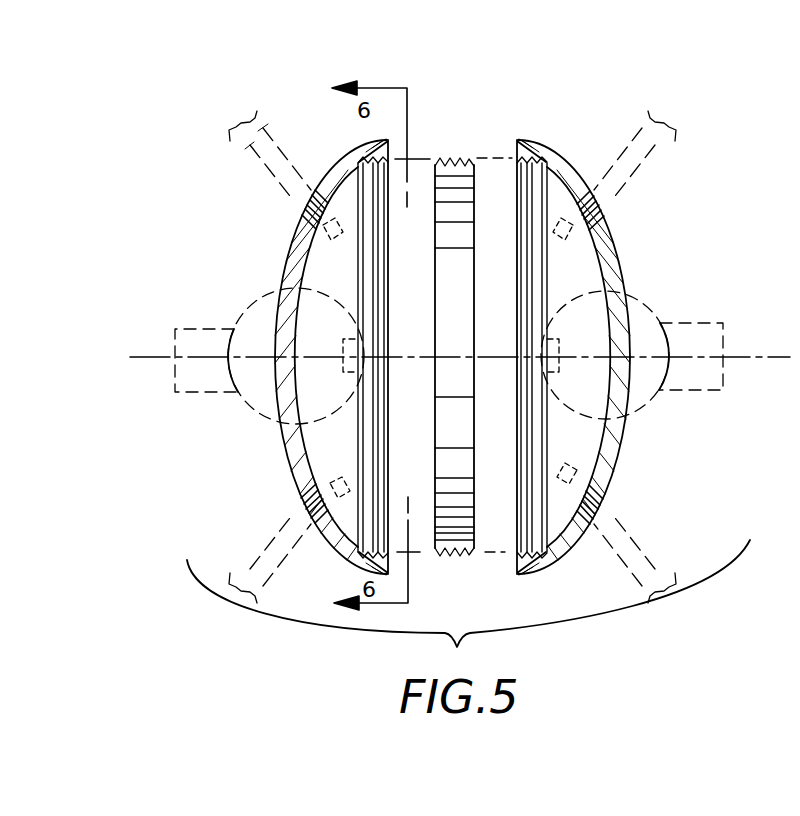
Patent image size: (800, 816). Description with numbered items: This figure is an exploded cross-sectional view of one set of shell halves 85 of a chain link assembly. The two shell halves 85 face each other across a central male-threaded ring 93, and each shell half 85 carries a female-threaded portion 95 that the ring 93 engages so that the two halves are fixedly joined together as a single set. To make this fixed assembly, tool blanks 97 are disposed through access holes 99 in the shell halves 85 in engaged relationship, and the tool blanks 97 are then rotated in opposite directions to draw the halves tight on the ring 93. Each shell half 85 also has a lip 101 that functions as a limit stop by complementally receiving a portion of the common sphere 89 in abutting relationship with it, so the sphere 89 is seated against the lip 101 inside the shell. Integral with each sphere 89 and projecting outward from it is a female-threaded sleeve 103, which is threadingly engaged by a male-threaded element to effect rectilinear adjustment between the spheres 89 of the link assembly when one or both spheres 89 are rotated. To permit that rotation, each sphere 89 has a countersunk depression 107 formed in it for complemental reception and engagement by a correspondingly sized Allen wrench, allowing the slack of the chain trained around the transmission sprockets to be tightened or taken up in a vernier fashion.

The shell half 85 is at (605, 243).
The sphere 89 is at (638, 318).
The male-threaded ring 93 is at (455, 157).
The female-threaded portion 95 is at (561, 162).
The tool blank 97 is at (250, 147).
The access hole 99 is at (303, 200).
The lip 101 is at (615, 397).
The female-threaded sleeve 103 is at (700, 337).
The depression 107 is at (343, 350).